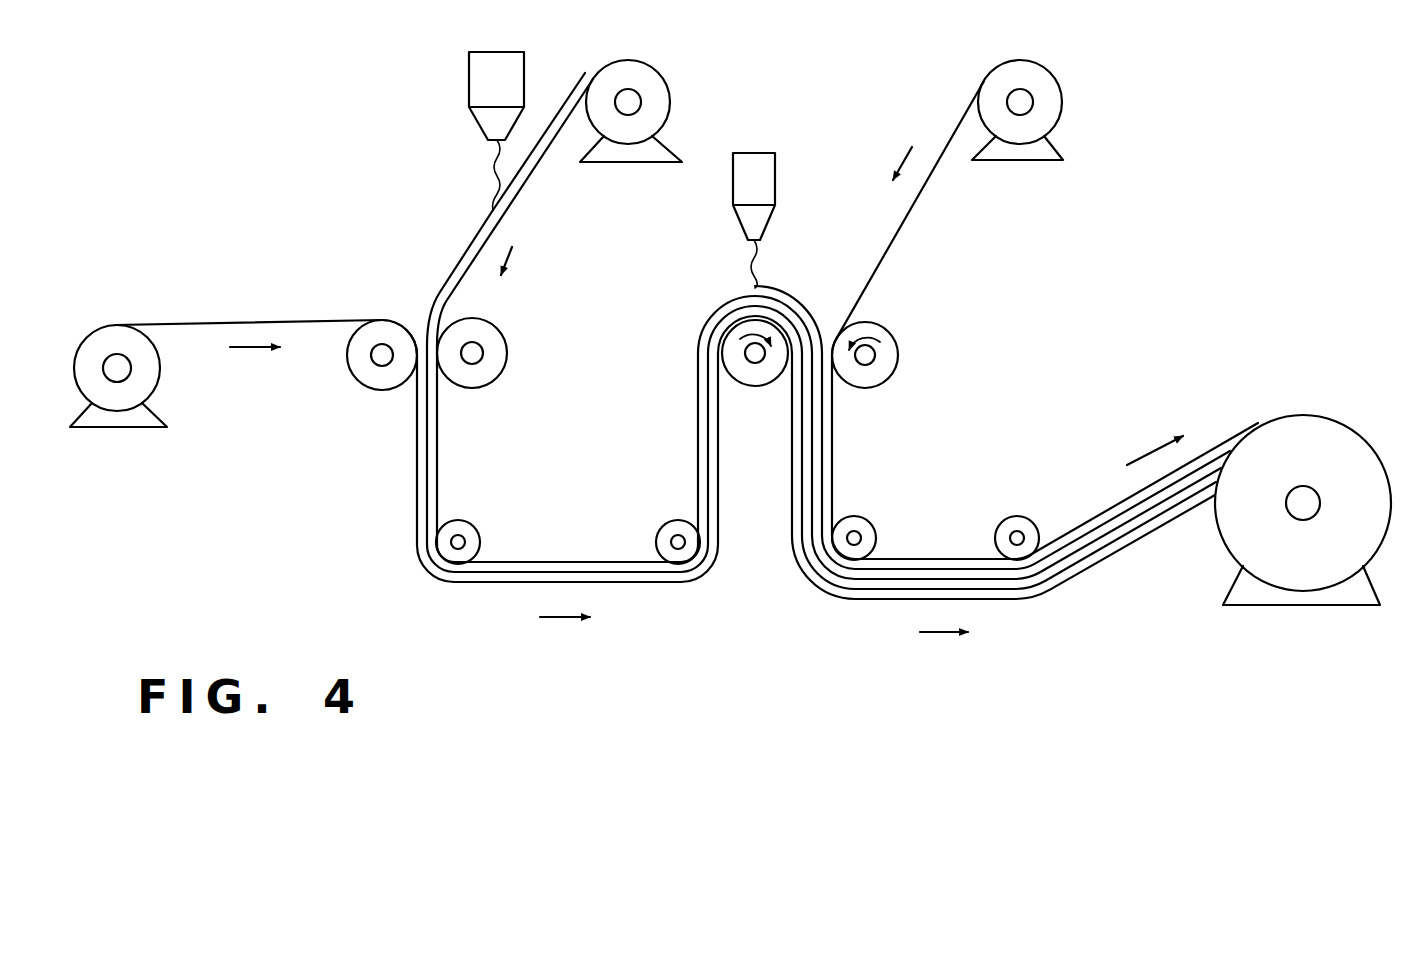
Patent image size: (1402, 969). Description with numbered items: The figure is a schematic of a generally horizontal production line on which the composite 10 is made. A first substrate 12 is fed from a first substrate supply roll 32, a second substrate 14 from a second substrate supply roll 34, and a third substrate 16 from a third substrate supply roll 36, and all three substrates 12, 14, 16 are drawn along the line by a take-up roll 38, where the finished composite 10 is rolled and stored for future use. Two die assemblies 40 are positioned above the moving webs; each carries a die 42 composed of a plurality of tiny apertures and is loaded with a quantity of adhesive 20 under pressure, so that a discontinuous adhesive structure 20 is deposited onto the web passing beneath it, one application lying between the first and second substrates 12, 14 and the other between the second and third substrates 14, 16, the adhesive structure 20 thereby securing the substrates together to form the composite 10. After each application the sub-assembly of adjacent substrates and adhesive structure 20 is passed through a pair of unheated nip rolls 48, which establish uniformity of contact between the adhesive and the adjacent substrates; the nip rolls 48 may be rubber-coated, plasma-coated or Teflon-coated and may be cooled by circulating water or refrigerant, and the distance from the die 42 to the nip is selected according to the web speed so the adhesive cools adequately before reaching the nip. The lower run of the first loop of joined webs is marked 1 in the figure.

The laminate 1 is at (553, 560).
The composite 10 is at (1128, 552).
The first substrate 12 is at (540, 176).
The second substrate 14 is at (238, 320).
The third substrate 16 is at (905, 222).
The adhesive structure 20 is at (462, 292).
The first substrate supply roll 32 is at (162, 378).
The second substrate supply roll 34 is at (663, 73).
The third substrate supply roll 36 is at (1047, 63).
The take-up roll 38 is at (1318, 422).
The die assembly 40 is at (469, 66).
The die 42 is at (490, 143).
The nip rolls 48 is at (378, 390).